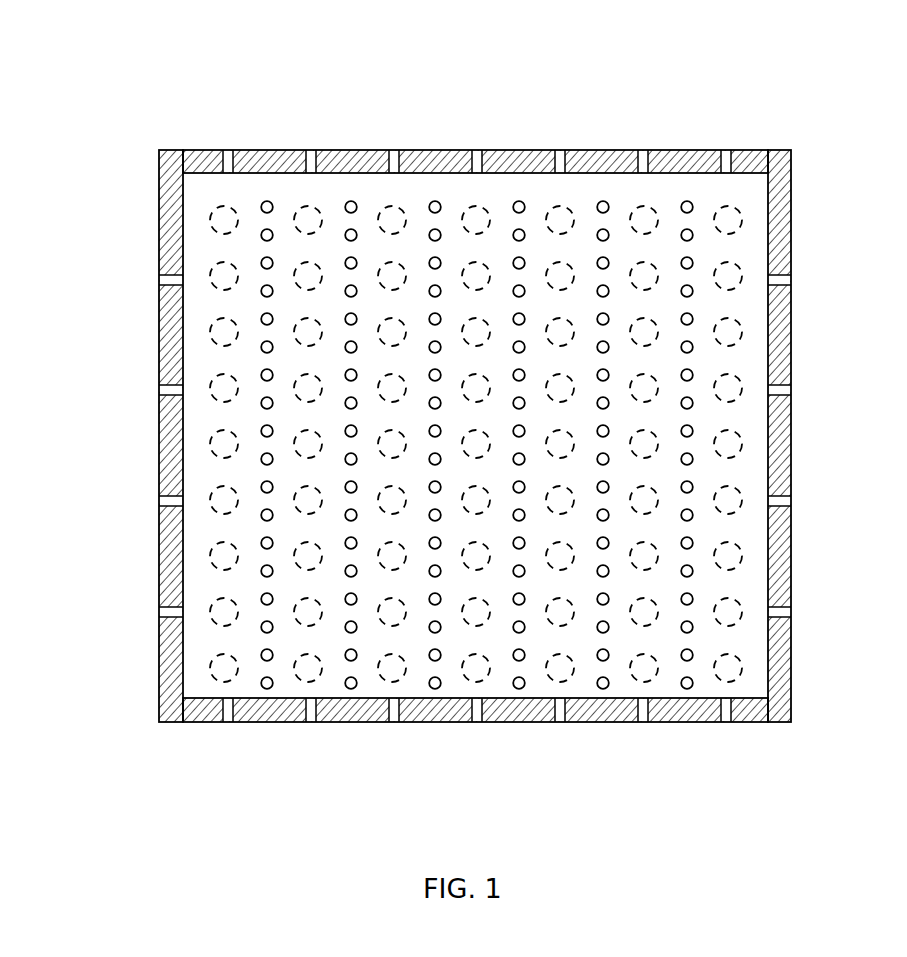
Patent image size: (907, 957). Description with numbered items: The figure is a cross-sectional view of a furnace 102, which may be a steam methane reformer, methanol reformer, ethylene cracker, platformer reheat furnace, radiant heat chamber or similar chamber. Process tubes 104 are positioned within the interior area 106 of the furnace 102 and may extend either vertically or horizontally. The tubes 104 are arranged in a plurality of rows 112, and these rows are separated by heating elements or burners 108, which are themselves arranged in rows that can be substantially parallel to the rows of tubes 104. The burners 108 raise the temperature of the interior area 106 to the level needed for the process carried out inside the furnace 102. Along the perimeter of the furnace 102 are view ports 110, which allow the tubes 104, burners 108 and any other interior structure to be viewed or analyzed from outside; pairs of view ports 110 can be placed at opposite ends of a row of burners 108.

The furnace 102 is at (158, 66).
The process tubes 104 is at (261, 372).
The interior area 106 is at (192, 644).
The burners 108 is at (486, 266).
The view ports 110 is at (228, 150).
The rows 112 is at (267, 201).